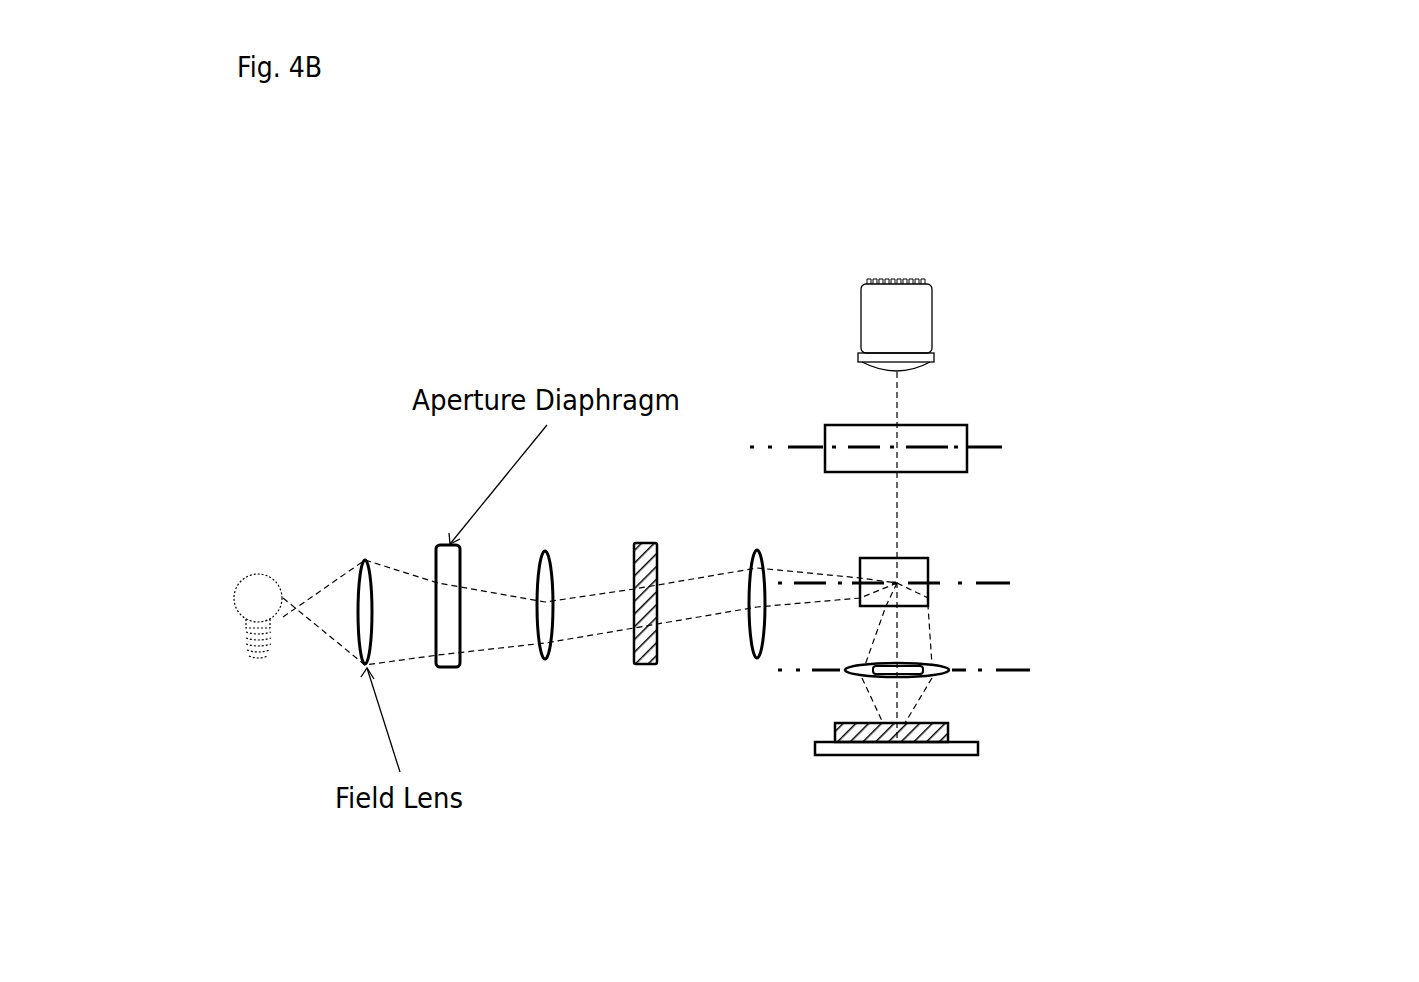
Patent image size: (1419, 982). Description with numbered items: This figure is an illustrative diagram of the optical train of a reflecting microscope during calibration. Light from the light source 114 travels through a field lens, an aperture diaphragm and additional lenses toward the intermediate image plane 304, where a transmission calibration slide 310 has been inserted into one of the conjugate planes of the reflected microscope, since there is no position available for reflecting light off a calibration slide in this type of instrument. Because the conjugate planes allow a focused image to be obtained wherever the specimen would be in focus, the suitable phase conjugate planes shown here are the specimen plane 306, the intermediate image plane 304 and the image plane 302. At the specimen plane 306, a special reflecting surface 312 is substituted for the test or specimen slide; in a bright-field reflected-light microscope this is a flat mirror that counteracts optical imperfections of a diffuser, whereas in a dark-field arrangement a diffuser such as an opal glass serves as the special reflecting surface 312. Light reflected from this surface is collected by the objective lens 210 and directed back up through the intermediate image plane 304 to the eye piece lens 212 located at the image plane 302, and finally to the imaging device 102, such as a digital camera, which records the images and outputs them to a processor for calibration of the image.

The light source 114 is at (258, 575).
The imaging device 102 is at (936, 324).
The eye piece lens 212 is at (967, 418).
The image plane 302 is at (986, 445).
The intermediate image plane 304 is at (1098, 582).
The specimen plane 306 is at (1046, 670).
The objective lens 210 is at (952, 673).
The calibration slide 310 is at (640, 663).
The special reflecting surface 312 is at (950, 744).